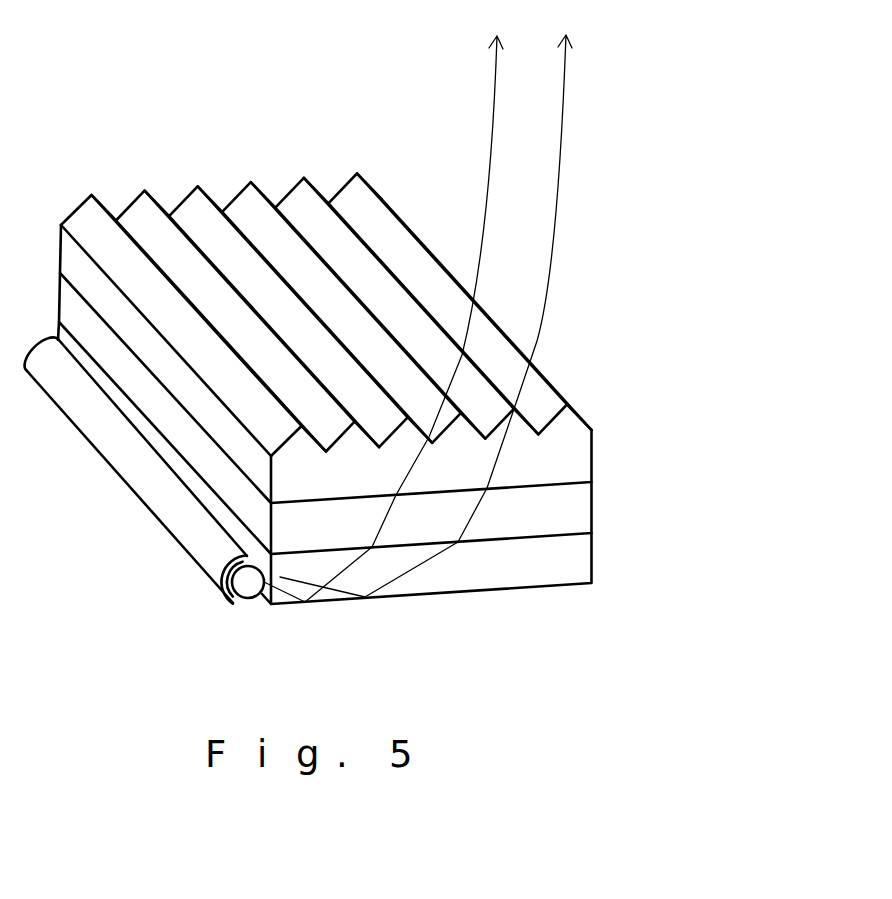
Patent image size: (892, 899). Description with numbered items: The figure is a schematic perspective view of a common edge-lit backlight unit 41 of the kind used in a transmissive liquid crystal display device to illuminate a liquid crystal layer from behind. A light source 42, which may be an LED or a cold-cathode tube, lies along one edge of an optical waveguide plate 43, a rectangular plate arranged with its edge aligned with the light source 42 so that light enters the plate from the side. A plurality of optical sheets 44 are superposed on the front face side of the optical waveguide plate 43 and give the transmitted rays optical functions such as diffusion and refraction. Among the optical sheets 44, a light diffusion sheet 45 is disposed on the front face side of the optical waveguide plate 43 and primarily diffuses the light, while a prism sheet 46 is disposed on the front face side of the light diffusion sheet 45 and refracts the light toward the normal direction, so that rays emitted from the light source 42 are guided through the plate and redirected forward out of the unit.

The edge-lit backlight unit 41 is at (389, 327).
The light source 42 is at (247, 582).
The optical waveguide plate 43 is at (573, 563).
The optical sheets 44 is at (389, 364).
The light diffusion sheet 45 is at (573, 516).
The prism sheet 46 is at (573, 462).